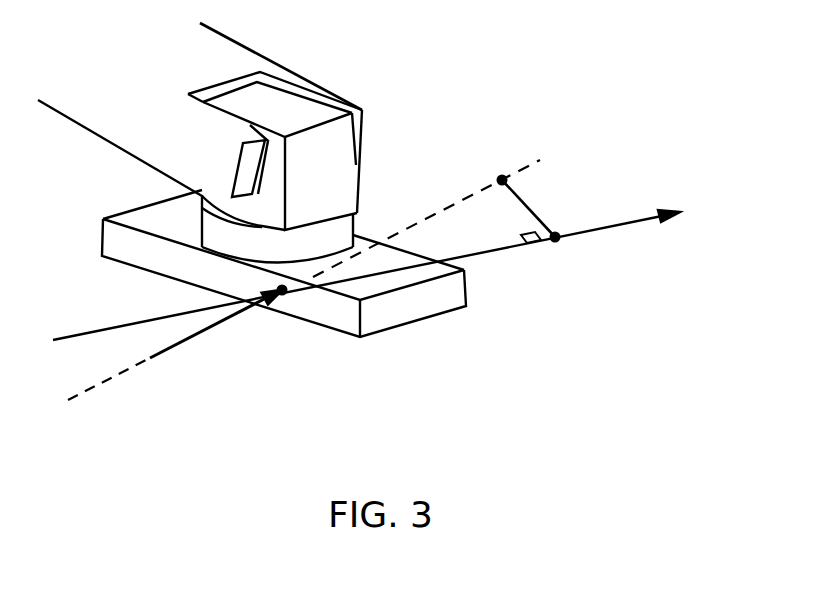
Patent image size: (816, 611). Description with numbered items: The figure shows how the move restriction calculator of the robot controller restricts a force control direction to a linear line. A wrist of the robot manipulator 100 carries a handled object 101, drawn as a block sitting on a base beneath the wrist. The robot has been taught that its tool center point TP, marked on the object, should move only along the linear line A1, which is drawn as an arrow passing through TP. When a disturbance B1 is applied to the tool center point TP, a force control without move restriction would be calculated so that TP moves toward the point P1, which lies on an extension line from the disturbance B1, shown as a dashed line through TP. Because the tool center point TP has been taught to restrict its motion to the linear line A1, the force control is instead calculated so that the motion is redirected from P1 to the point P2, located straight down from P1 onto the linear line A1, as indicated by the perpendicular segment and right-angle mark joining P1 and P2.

The wrist of the robot manipulator 100 is at (260, 55).
The object handled 101 is at (102, 229).
The tool center point TP is at (286, 296).
The point located on an extension line from the disturbance P1 is at (519, 191).
The point located straight down from P1 P2 is at (550, 256).
The linear line A1 is at (391, 269).
The disturbance B1 is at (304, 280).